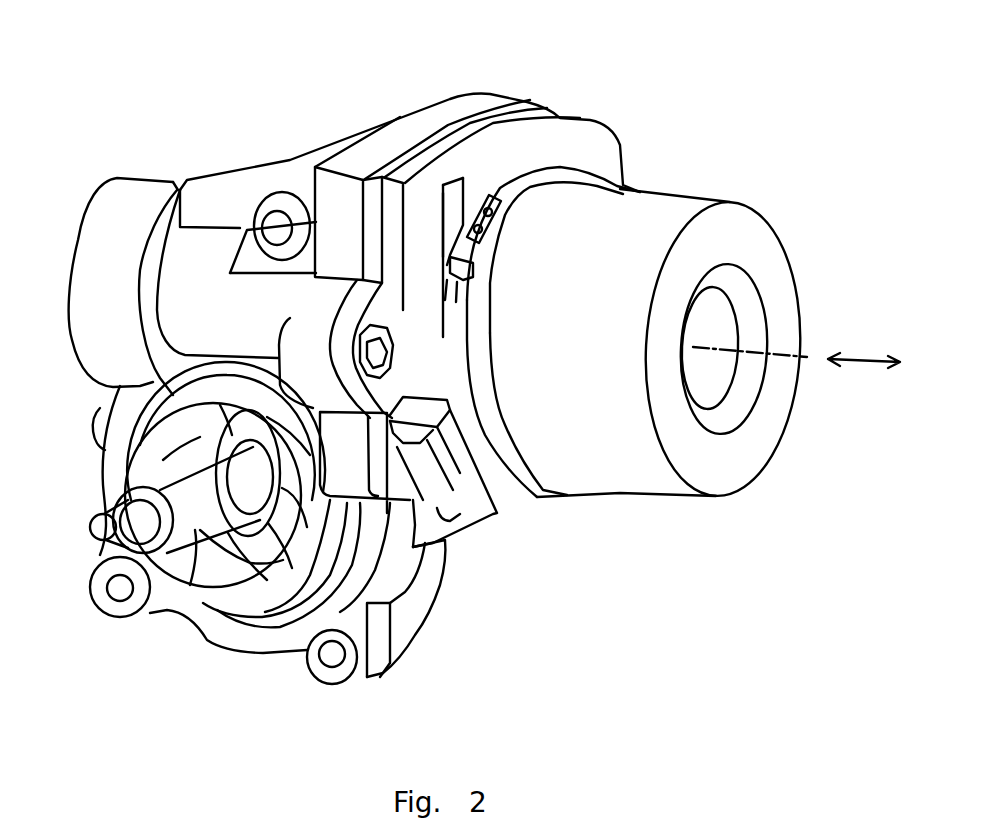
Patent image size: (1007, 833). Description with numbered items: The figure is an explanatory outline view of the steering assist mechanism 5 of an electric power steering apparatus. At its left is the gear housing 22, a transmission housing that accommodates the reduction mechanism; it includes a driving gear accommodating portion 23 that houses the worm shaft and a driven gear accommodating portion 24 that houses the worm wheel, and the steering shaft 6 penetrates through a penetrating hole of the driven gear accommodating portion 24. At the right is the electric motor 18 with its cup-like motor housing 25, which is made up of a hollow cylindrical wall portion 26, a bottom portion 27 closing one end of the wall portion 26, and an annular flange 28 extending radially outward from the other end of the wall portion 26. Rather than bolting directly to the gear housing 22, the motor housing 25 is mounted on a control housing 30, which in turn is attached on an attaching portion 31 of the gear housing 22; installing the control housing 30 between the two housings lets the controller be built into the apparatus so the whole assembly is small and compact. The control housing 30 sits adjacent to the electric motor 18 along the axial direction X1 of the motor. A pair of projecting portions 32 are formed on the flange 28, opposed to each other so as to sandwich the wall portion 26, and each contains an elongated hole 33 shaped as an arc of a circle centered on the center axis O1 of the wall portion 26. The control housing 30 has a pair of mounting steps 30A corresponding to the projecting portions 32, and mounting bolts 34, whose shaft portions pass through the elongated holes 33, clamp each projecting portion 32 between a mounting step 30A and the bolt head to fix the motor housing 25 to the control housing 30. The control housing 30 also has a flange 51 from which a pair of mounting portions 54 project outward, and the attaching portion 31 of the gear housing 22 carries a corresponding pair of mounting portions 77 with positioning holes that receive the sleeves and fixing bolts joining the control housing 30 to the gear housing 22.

The steering assist mechanism 5 is at (214, 68).
The steering shaft 6 is at (193, 525).
The electric motor 18 is at (763, 148).
The gear housing 22 is at (145, 161).
The driving gear accommodating portion 23 is at (93, 338).
The driven gear accommodating portion 24 is at (258, 637).
The motor housing 25 is at (671, 185).
The wall portion 26 is at (623, 473).
The bottom portion 27 is at (767, 443).
The annular flange 28 is at (510, 462).
The control housing 30 is at (610, 120).
The mounting steps 30A is at (463, 178).
The attaching portion 31 is at (423, 127).
The projecting portions 32 is at (500, 180).
The elongated holes 33 is at (497, 216).
The mounting bolts 34 is at (493, 230).
The flange 51 is at (383, 352).
The mounting portions 54 is at (352, 303).
The mounting portions 77 is at (310, 340).
The center axis O1 is at (790, 352).
The axial direction X1 is at (853, 363).